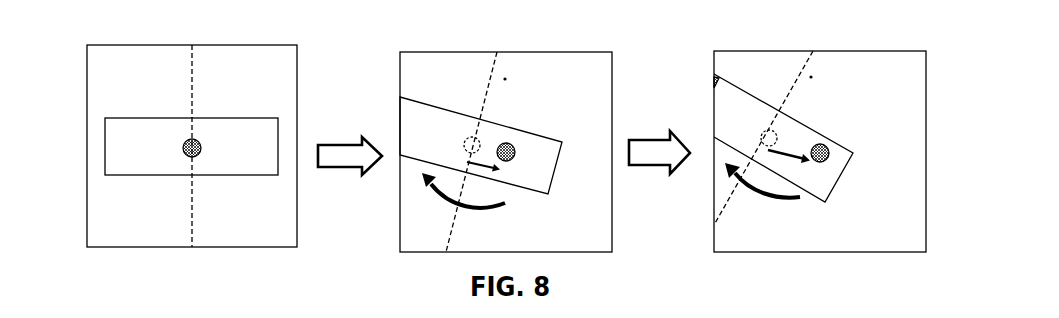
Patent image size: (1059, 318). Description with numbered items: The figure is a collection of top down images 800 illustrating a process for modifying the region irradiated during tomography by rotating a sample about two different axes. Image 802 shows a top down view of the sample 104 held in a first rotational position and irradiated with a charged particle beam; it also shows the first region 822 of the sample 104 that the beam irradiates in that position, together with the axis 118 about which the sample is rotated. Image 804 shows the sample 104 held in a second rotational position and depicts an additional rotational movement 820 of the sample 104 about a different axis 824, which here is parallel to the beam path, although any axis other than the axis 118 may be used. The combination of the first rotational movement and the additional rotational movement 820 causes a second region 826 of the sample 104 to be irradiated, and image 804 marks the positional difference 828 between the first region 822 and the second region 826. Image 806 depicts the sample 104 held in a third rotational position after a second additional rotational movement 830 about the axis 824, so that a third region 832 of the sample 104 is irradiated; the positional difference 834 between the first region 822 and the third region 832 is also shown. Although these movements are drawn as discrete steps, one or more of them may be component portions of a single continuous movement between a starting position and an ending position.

The collection of top down images 800 is at (116, 21).
The image 802 is at (280, 36).
The image 804 is at (598, 37).
The image 806 is at (912, 34).
The sample 104 is at (258, 119).
The axis 118 is at (190, 221).
The additional rotational movement 820 is at (450, 207).
The first region 822 is at (183, 146).
The different axis 824 is at (507, 79).
The second region 826 is at (516, 146).
The positional difference 828 is at (481, 166).
The second additional rotational movement 830 is at (760, 200).
The third region 832 is at (828, 147).
The positional difference 834 is at (797, 157).